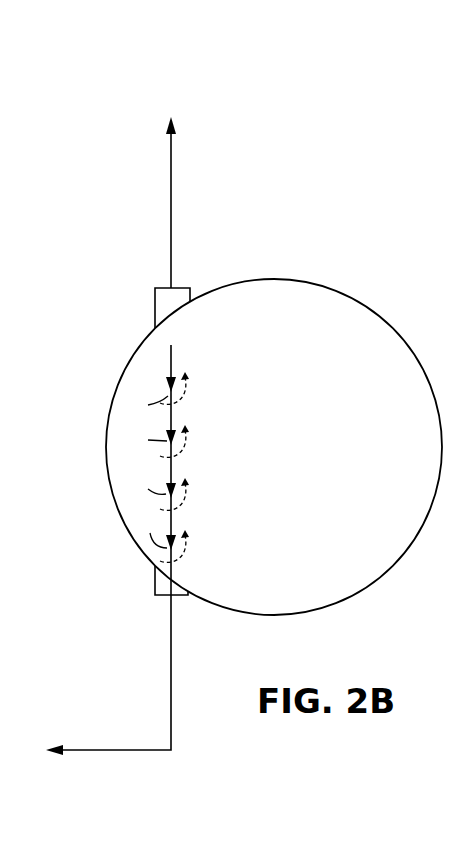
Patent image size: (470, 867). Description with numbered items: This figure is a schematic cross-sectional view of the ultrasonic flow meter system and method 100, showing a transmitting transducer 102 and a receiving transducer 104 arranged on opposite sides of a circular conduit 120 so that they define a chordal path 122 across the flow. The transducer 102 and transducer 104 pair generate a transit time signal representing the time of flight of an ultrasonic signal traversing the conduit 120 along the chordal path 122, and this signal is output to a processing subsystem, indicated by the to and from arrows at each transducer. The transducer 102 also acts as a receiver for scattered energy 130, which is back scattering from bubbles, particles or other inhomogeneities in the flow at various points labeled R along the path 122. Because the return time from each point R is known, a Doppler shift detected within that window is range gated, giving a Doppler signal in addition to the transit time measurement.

The ultrasonic flow meter system and method 100 is at (285, 157).
The transmitting transducer 102 is at (148, 302).
The receiving transducer 104 is at (166, 597).
The conduit 120 is at (116, 502).
The chordal path 122 is at (169, 363).
The scattered energy 130 is at (194, 384).